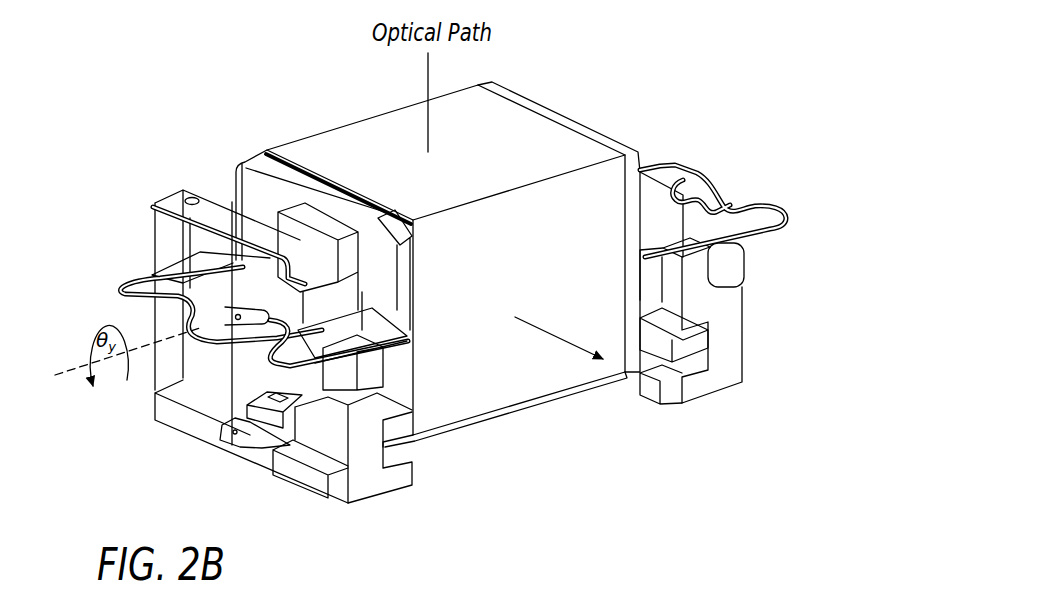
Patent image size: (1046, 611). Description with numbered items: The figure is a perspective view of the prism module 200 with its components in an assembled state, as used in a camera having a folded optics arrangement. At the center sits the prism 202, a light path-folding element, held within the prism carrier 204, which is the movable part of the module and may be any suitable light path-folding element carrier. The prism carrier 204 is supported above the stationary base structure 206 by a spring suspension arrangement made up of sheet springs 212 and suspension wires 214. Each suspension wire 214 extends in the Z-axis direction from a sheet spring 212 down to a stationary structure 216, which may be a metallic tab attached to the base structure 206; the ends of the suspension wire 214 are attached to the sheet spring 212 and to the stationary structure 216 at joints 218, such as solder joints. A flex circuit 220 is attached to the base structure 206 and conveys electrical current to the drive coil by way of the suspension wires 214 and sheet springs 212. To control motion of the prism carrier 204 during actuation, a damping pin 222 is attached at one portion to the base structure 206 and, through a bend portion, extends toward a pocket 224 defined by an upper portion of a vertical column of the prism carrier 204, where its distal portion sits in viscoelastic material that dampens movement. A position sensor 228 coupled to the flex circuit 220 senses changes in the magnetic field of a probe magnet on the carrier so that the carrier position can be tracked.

The prism module 200 is at (259, 71).
The prism 202 is at (345, 145).
The prism carrier 204 is at (262, 160).
The base structure 206 is at (739, 391).
The sheet spring 212 is at (777, 201).
The suspension wire 214 is at (231, 379).
The stationary structure 216 is at (218, 438).
The joint 218 is at (234, 446).
The flex circuit 220 is at (416, 441).
The damping pin 222 is at (234, 228).
The pocket 224 is at (306, 274).
The position sensor 228 is at (274, 404).